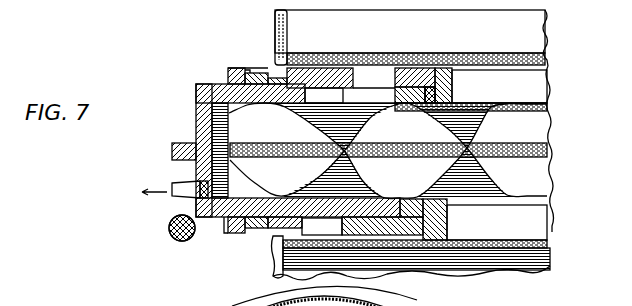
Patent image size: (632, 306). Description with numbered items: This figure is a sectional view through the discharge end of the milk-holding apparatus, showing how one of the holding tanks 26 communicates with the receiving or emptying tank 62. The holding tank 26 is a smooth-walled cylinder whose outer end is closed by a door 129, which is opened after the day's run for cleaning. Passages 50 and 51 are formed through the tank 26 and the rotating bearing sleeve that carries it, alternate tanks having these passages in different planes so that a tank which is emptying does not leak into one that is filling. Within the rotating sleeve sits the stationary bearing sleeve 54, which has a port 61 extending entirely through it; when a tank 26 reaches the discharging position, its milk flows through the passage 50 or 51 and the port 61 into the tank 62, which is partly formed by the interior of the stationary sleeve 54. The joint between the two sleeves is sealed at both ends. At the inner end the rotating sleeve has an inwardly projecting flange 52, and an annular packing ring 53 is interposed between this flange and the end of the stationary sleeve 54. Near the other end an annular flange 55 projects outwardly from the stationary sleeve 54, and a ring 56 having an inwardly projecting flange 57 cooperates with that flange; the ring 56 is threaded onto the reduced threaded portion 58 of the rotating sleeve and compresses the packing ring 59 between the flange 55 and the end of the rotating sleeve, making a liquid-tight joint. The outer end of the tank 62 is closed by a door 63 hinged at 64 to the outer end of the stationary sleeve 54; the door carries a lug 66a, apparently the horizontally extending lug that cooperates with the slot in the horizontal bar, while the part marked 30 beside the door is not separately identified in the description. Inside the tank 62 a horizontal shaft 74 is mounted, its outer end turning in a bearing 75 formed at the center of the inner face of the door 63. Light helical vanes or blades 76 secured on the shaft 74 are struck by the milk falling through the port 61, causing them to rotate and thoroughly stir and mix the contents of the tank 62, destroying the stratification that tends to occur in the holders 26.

The holding tank 26 is at (560, 255).
The door 129 is at (283, 28).
The door 63 is at (196, 115).
The projection 66a is at (172, 150).
The pin 30 is at (173, 197).
The hinge 64 is at (170, 234).
The ring 56 is at (228, 70).
The annular flange 55 is at (238, 66).
The packing ring 59 is at (248, 70).
The reduced threaded portion 58 is at (257, 70).
The inwardly projecting flange 57 is at (227, 222).
The passage 50 is at (383, 72).
The port 61 is at (322, 90).
The passage 51 is at (278, 254).
The stationary bearing sleeve 54 is at (405, 97).
The annular packing ring 53 is at (428, 100).
The inwardly projecting flange 52 is at (453, 89).
The horizontal shaft 74 is at (394, 152).
The bearing 75 is at (236, 164).
The helical vanes 76 is at (507, 178).
The tank 62 is at (553, 201).